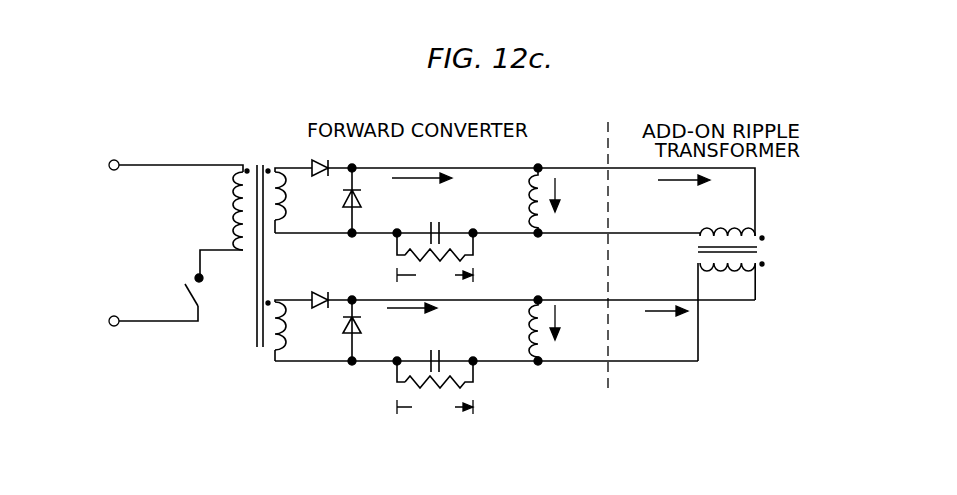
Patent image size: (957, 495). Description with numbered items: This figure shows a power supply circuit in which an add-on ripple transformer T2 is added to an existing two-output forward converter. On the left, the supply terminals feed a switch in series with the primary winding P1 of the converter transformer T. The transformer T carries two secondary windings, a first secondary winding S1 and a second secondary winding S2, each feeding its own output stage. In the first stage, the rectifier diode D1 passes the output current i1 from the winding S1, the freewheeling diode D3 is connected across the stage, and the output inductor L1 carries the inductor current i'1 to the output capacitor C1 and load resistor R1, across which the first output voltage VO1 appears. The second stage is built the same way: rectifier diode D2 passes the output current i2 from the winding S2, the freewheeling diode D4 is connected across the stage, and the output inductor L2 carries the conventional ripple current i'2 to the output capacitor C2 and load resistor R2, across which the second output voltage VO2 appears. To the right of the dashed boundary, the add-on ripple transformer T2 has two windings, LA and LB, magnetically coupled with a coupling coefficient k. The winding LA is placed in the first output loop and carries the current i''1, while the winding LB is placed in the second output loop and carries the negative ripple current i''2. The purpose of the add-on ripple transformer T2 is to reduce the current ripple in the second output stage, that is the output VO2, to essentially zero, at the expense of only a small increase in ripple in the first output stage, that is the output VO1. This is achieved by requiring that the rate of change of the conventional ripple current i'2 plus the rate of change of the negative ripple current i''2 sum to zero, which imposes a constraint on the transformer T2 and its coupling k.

The primary winding P1 is at (233, 210).
The transformer T is at (256, 245).
The first secondary winding S1 is at (286, 197).
The second secondary winding S2 is at (284, 330).
The first rectifier diode D1 is at (310, 166).
The second rectifier diode D2 is at (321, 291).
The first freewheeling diode D3 is at (358, 206).
The second freewheeling diode D4 is at (357, 336).
The first output inductor L1 is at (530, 200).
The second output inductor L2 is at (528, 327).
The first output capacitor C1 is at (441, 224).
The second output capacitor C2 is at (439, 351).
The first load resistor R1 is at (400, 255).
The second load resistor R2 is at (435, 374).
The first output stage voltage VO1 is at (435, 275).
The second output stage voltage VO2 is at (435, 406).
The first output current i1 is at (422, 189).
The second output current i2 is at (412, 320).
The first inductor current i'1 is at (566, 195).
The conventional ripple current i'2 is at (566, 322).
The first ripple transformer current i''1 is at (684, 190).
The negative ripple current i''2 is at (665, 322).
The add-on ripple transformer T2 is at (714, 249).
The ripple transformer winding A LA is at (732, 219).
The ripple transformer winding B LB is at (731, 311).
The coupling coefficient k is at (765, 285).